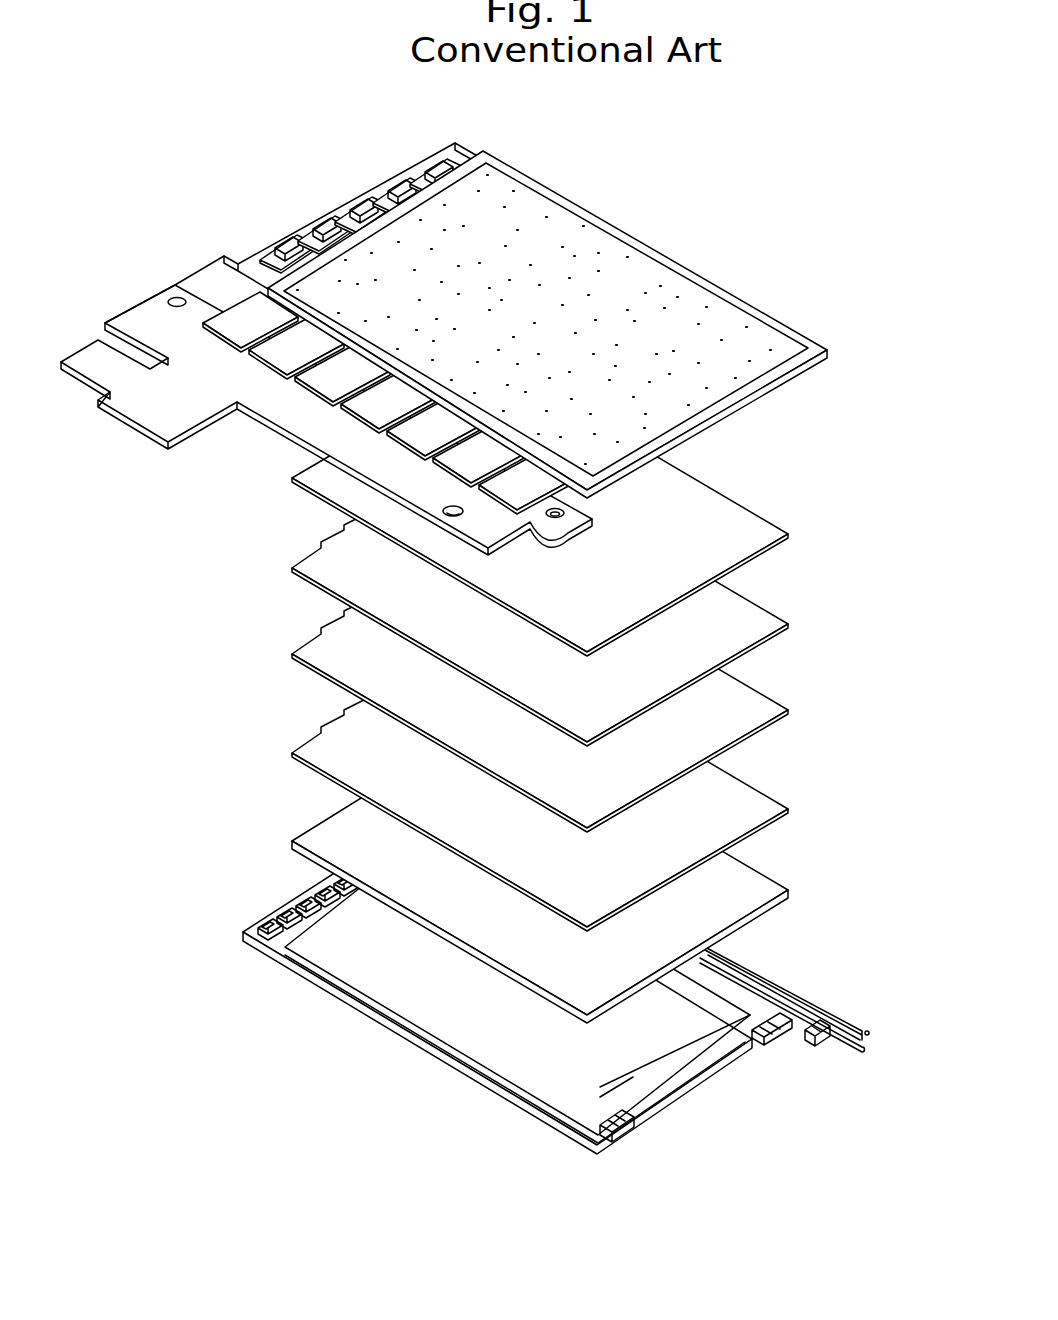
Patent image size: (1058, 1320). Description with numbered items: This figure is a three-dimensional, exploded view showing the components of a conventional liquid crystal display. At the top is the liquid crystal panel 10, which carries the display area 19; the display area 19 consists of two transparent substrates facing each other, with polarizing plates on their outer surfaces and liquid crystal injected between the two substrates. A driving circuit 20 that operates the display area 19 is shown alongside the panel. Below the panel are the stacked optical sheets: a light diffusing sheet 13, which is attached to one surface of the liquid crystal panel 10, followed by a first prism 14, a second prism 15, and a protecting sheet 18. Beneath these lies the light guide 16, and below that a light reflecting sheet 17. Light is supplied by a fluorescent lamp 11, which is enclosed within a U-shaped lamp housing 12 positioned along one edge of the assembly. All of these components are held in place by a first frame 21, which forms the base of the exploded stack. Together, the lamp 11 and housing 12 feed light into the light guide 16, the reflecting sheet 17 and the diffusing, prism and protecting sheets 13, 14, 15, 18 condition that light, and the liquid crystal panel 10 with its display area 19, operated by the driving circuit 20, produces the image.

The liquid crystal panel 10 is at (784, 322).
The fluorescent lamp 11 is at (862, 1056).
The U-shaped lamp housing 12 is at (840, 1027).
The light diffusing sheet 13 is at (793, 534).
The first prism 14 is at (292, 664).
The second prism 15 is at (793, 626).
The light guide 16 is at (793, 888).
The light reflecting sheet 17 is at (330, 965).
The protecting sheet 18 is at (292, 764).
The display area 19 is at (605, 242).
The driving circuit 20 is at (237, 270).
The first frame 21 is at (507, 1100).